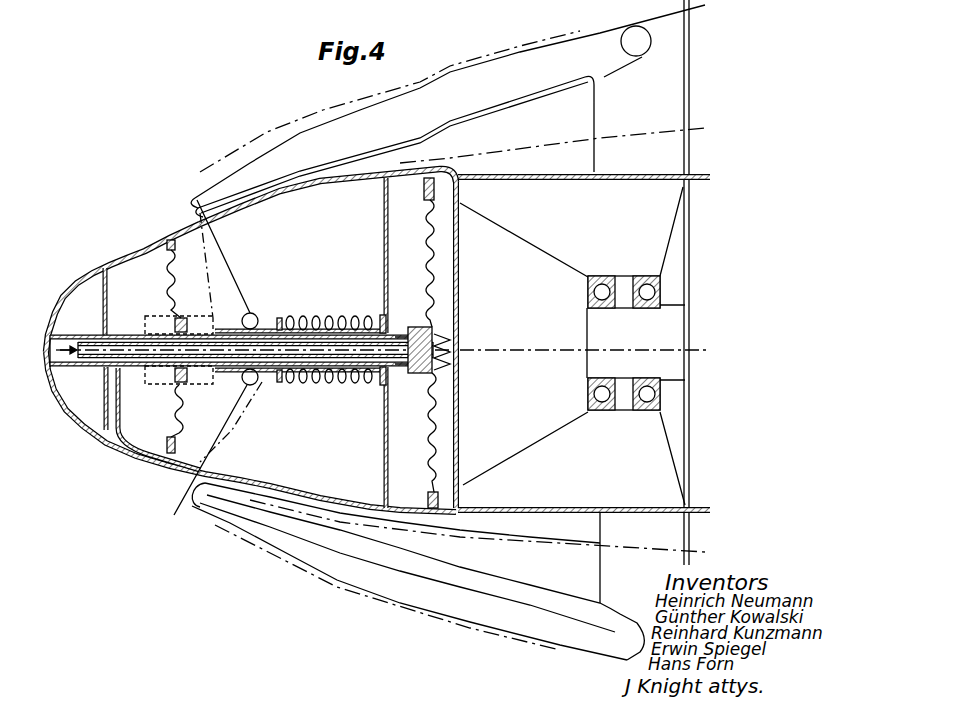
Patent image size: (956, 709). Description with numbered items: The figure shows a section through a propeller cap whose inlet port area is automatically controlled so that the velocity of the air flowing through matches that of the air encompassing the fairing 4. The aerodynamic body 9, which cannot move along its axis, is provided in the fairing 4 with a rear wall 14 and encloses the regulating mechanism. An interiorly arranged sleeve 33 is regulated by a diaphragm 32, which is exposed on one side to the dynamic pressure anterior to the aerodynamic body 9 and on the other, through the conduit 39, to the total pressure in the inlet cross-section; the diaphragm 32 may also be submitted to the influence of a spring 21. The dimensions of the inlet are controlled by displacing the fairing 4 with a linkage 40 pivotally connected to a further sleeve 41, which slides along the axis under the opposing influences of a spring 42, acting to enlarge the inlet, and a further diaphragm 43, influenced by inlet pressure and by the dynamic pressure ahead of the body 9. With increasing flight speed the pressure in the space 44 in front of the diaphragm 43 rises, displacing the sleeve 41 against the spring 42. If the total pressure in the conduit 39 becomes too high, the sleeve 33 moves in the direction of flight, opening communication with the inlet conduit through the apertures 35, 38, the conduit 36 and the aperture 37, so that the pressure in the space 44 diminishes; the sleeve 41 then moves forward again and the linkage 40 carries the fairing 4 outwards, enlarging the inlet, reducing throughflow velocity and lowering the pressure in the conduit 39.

The fairing 4 is at (343, 573).
The aerodynamic body 9 is at (113, 437).
The rear wall 14 is at (388, 285).
The spring 21 is at (447, 335).
The diaphragm 32 is at (434, 432).
The sleeve 33 is at (395, 358).
The aperture 35 is at (132, 370).
The conduit 36 is at (145, 453).
The aperture 37 is at (202, 372).
The aperture 38 is at (110, 368).
The conduit 39 is at (308, 190).
The linkage 40 is at (235, 433).
The sleeve 41 is at (263, 378).
The spring 42 is at (340, 383).
The further diaphragm 43 is at (172, 283).
The space 44 is at (137, 275).